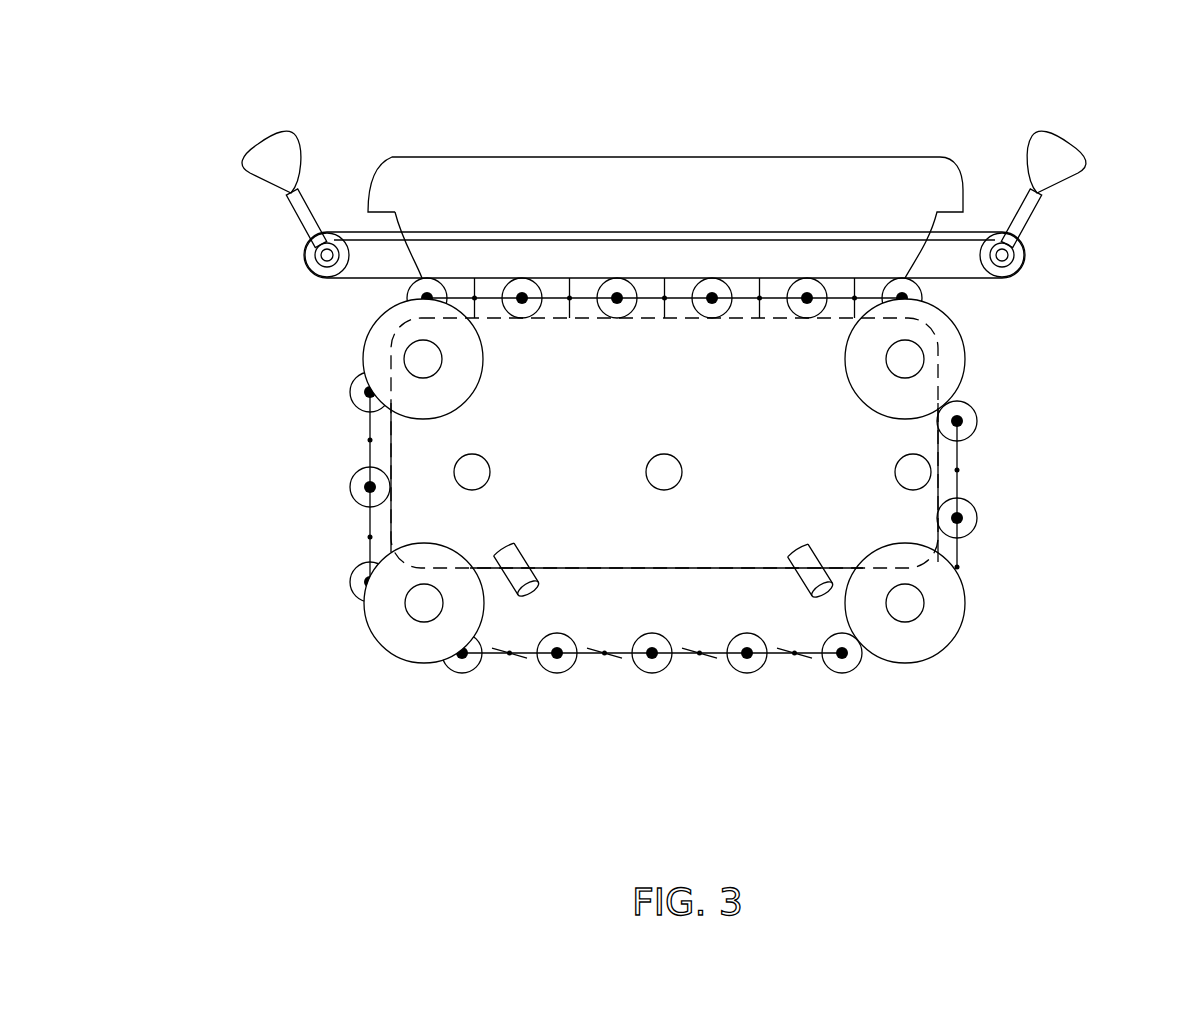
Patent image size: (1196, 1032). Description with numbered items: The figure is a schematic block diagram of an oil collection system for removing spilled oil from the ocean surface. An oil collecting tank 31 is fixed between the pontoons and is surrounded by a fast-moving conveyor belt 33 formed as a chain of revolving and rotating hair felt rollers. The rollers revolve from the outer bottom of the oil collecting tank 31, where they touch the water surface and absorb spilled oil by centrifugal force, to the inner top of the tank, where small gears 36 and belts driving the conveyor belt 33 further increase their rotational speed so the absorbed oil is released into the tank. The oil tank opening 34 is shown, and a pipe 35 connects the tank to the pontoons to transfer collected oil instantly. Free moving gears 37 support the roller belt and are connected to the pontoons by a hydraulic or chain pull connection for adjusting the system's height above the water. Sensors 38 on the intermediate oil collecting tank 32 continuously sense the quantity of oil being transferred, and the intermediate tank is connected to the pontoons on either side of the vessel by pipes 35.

The oil collecting tank 31 is at (753, 157).
The intermediate oil collecting tank 32 is at (732, 568).
The conveyor belt 33 is at (972, 232).
The oil tank opening 34 is at (390, 359).
The pipe 35 is at (513, 590).
The small gears 36 is at (1043, 197).
The free moving gears 37 is at (1013, 618).
The sensors 38 is at (454, 465).